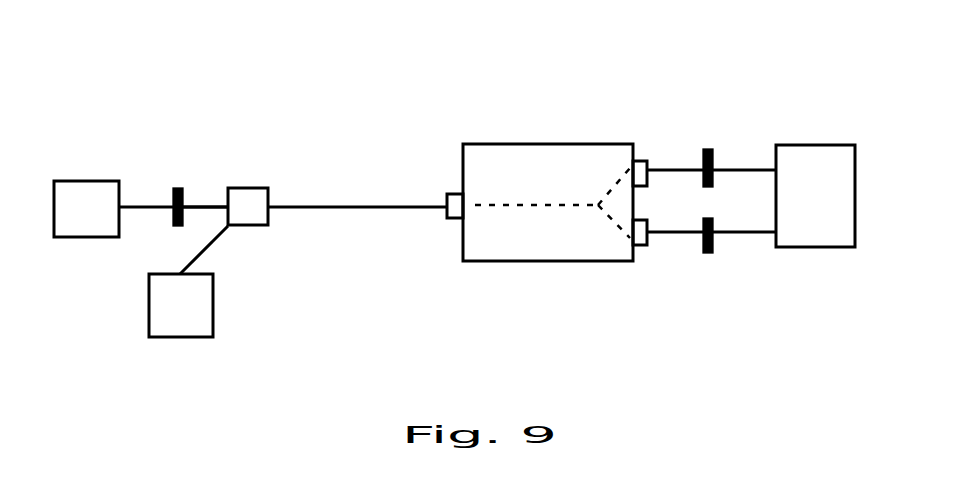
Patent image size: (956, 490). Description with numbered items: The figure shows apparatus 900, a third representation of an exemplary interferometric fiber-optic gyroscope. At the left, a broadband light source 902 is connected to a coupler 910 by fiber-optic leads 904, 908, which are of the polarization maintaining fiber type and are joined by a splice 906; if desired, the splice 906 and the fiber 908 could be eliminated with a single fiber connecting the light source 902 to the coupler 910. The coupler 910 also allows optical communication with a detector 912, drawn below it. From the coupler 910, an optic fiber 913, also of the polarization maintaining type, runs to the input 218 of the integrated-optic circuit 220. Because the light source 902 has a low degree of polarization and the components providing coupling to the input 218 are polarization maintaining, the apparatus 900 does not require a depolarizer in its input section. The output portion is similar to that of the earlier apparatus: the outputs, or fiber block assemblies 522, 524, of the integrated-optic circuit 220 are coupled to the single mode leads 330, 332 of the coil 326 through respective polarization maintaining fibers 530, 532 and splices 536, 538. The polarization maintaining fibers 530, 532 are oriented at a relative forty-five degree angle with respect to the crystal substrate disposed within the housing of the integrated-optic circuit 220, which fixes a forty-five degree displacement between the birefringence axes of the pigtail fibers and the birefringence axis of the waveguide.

The apparatus 900 is at (375, 56).
The broadband light source 902 is at (82, 181).
The fiber-optic lead 904 is at (133, 204).
The splice 906 is at (180, 187).
The fiber-optic lead 908 is at (213, 206).
The coupler 910 is at (250, 188).
The detector 912 is at (180, 338).
The optic fiber 913 is at (345, 212).
The input 218 is at (450, 192).
The integrated-optic circuit 220 is at (559, 144).
The fiber block assembly 522 is at (633, 158).
The fiber block assembly 524 is at (645, 247).
The polarization maintaining fiber 530 is at (680, 167).
The polarization maintaining fiber 532 is at (669, 234).
The splice 536 is at (705, 149).
The splice 538 is at (703, 253).
The single mode lead 330 is at (742, 168).
The single mode lead 332 is at (760, 235).
The coil 326 is at (786, 145).